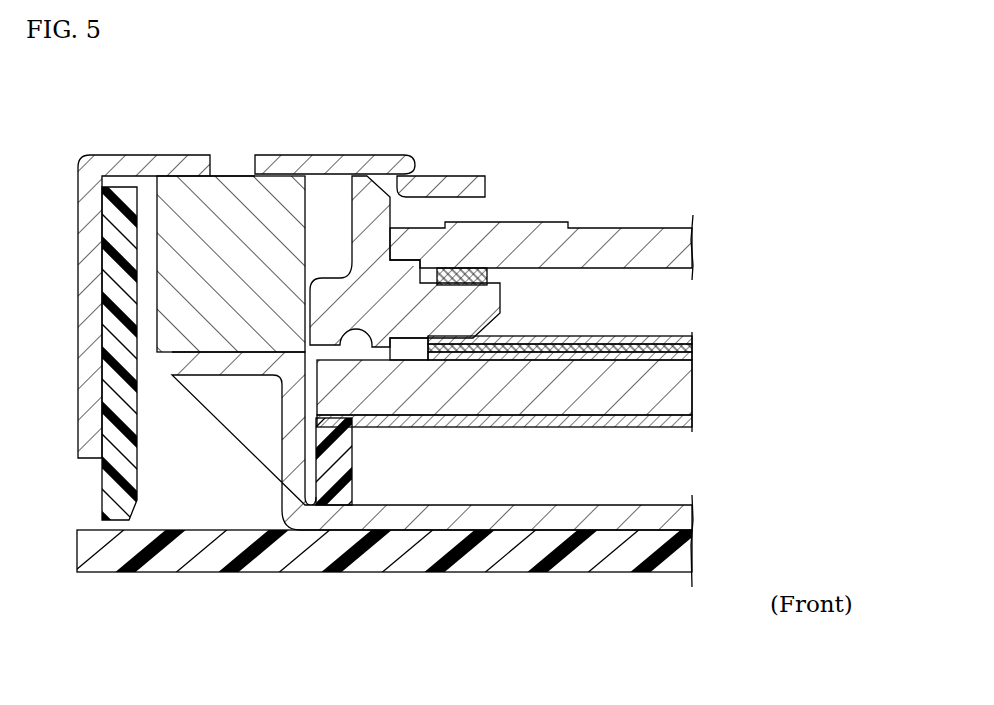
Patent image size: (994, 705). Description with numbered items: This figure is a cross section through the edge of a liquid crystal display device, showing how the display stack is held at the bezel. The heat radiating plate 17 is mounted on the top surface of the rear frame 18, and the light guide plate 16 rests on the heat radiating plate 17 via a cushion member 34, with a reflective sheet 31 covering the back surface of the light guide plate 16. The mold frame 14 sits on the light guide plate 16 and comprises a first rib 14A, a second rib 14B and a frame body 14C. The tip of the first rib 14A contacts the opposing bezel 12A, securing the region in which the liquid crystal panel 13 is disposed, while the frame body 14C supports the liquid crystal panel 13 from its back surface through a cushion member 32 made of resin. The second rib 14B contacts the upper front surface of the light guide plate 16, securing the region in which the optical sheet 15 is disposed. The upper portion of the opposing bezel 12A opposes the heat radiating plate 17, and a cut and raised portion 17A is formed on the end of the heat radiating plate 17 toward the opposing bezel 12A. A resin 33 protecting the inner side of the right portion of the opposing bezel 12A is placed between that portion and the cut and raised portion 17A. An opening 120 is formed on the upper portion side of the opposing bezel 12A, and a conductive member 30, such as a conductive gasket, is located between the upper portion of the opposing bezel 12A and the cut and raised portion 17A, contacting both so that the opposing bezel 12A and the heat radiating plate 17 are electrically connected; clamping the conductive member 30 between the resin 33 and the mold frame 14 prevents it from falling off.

The opposing bezel 12A is at (147, 157).
The opening 120 is at (214, 170).
The conductive member 30 is at (227, 335).
The resin 33 is at (120, 468).
The cut and raised portion 17A is at (252, 352).
The heat radiating plate 17 is at (693, 511).
The rear frame 18 is at (693, 546).
The liquid crystal panel 13 is at (616, 228).
The cushion member 32 is at (503, 274).
The mold frame 14 is at (581, 235).
The first rib 14A is at (392, 215).
The frame body 14C is at (503, 308).
The second rib 14B is at (392, 348).
The optical sheet 15 is at (698, 332).
The light guide plate 16 is at (695, 392).
The reflective sheet 31 is at (688, 422).
The cushion member 34 is at (346, 468).